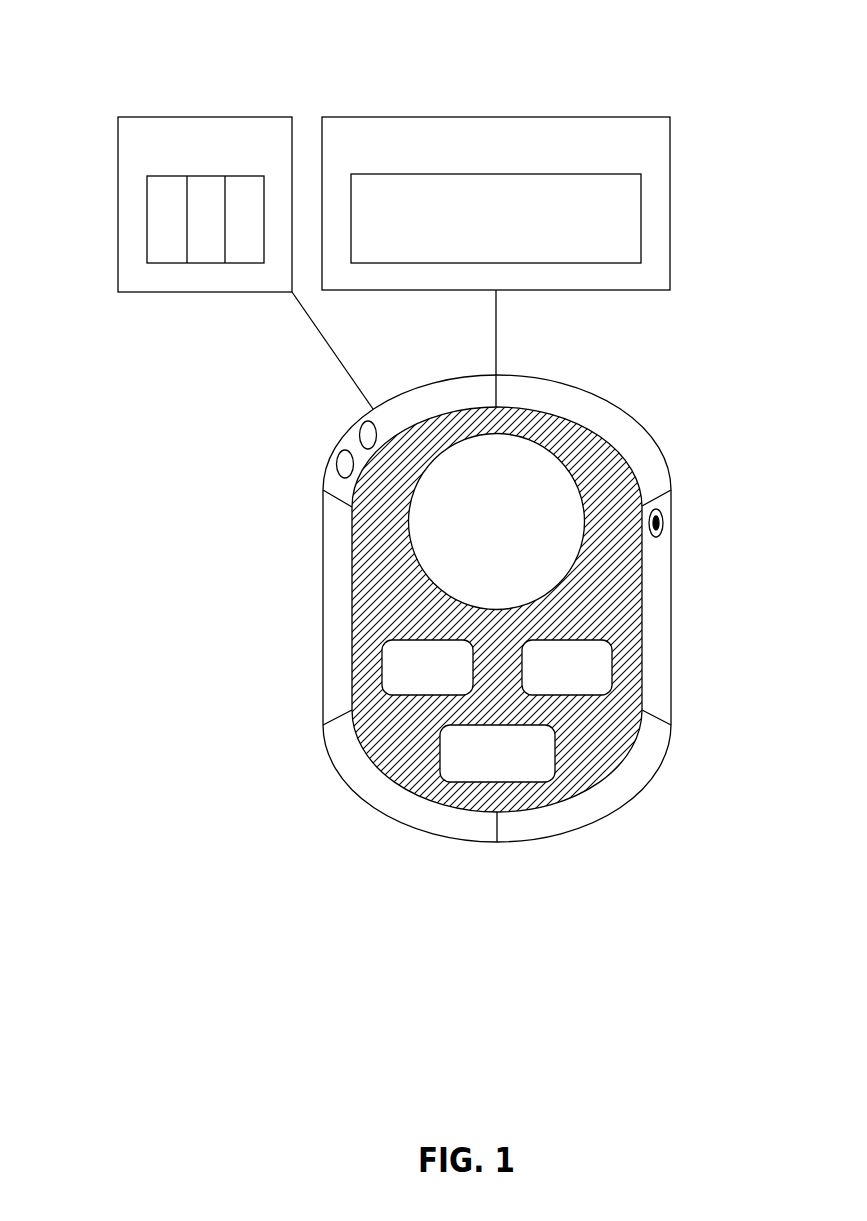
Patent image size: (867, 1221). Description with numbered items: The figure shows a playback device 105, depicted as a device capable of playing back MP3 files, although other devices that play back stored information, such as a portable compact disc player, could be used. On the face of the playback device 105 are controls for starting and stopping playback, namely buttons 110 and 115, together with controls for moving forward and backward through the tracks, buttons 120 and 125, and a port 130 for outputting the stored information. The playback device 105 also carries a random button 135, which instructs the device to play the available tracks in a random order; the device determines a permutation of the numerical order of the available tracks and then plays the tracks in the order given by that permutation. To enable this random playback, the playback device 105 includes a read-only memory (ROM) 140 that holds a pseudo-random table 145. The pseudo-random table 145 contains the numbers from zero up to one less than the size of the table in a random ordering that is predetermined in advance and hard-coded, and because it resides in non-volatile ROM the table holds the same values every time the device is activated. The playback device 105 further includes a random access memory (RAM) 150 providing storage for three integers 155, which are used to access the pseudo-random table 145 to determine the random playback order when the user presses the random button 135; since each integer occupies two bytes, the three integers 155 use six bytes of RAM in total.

The playback device 105 is at (323, 492).
The start button 110 is at (382, 667).
The stop button 115 is at (612, 667).
The forward button 120 is at (358, 430).
The backward button 125 is at (338, 463).
The port 130 is at (663, 522).
The random button 135 is at (468, 782).
The read-only memory (ROM) 140 is at (367, 116).
The pseudo-random table 145 is at (641, 217).
The random access memory (RAM) 150 is at (165, 117).
The integers 155 is at (147, 218).